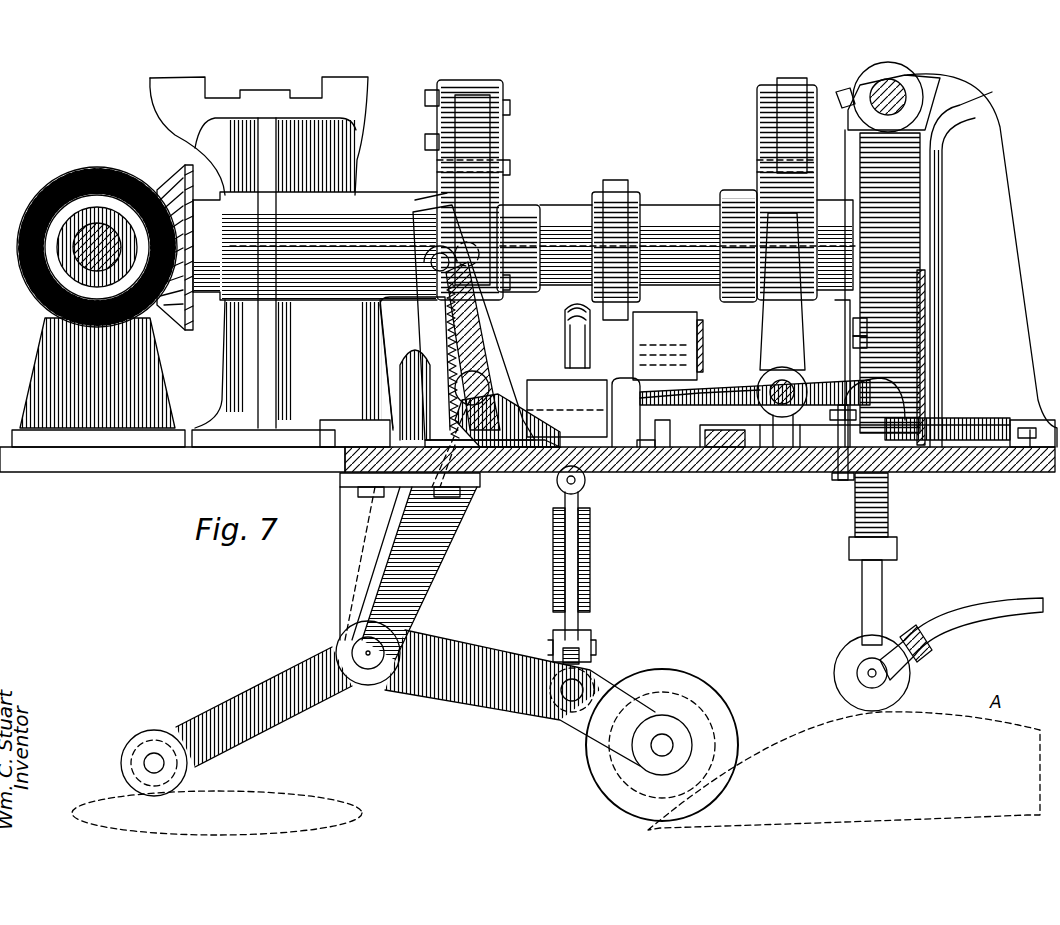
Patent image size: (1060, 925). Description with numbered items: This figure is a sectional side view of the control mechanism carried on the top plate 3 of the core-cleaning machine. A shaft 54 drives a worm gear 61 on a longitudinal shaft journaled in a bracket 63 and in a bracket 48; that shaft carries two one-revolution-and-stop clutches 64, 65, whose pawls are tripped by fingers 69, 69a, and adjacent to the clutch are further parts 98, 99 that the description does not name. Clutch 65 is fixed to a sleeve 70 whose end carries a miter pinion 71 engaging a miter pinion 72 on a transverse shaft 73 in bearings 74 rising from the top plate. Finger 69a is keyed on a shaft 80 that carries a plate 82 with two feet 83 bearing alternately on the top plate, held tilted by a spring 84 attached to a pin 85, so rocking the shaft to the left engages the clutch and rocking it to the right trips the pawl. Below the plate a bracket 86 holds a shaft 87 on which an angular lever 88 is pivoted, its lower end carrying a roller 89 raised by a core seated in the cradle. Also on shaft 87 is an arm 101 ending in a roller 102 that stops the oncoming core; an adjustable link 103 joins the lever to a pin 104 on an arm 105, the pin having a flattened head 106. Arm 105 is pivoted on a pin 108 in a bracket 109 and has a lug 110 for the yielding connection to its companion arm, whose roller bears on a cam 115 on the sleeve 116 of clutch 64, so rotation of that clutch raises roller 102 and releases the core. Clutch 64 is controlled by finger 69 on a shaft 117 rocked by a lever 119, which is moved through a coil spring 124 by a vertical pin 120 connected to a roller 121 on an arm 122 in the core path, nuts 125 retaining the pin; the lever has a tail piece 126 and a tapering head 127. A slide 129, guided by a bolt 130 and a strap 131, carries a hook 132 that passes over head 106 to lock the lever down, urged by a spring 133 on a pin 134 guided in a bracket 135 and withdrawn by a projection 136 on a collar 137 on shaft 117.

The top plate 3 is at (712, 474).
The bracket 48 is at (370, 85).
The shaft 54 is at (923, 100).
The worm gear 61 is at (900, 238).
The bracket 63 is at (1033, 322).
The one-revolution-and-stop clutch 64 is at (818, 146).
The one-revolution-and-stop clutch 65 is at (505, 138).
The finger 69 is at (810, 334).
The finger 69a is at (432, 208).
The sleeve 70 is at (315, 246).
The miter pinion 71 is at (185, 168).
The miter pinion 72 is at (113, 167).
The transverse shaft 73 is at (100, 260).
The bearings 74 is at (160, 366).
The shaft 80 is at (490, 370).
The plate 82 is at (490, 332).
The feet 83 is at (462, 478).
The spring 84 is at (490, 308).
The pin 85 is at (452, 258).
The bracket 86 is at (452, 552).
The shaft 87 is at (352, 650).
The angular lever 88 is at (280, 672).
The roller 89 is at (150, 740).
The hub 98 is at (437, 110).
The plate 99 is at (415, 368).
The arm 101 is at (486, 712).
The roller 102 is at (710, 682).
The adjustable link 103 is at (588, 572).
The pin 104 is at (486, 392).
The arm 105 is at (530, 470).
The flattened head 106 is at (628, 474).
The pin 108 is at (705, 340).
The bracket 109 is at (665, 346).
The lug 110 is at (560, 325).
The cam 115 is at (618, 190).
The sleeve 116 is at (688, 210).
The shaft 117 is at (782, 380).
The lever 119 is at (812, 382).
The vertical pin 120 is at (884, 584).
The roller 121 is at (912, 684).
The arm 122 is at (1005, 608).
The coil spring 124 is at (890, 516).
The nuts 125 is at (853, 326).
The tail piece 126 is at (918, 396).
The tapering head 127 is at (700, 398).
The slide 129 is at (748, 474).
The bolt 130 is at (840, 482).
The strap 131 is at (682, 474).
The hook 132 is at (690, 382).
The spring 133 is at (952, 416).
The pin 134 is at (1025, 472).
The bracket 135 is at (1018, 418).
The projection 136 is at (782, 474).
The collar 137 is at (812, 358).